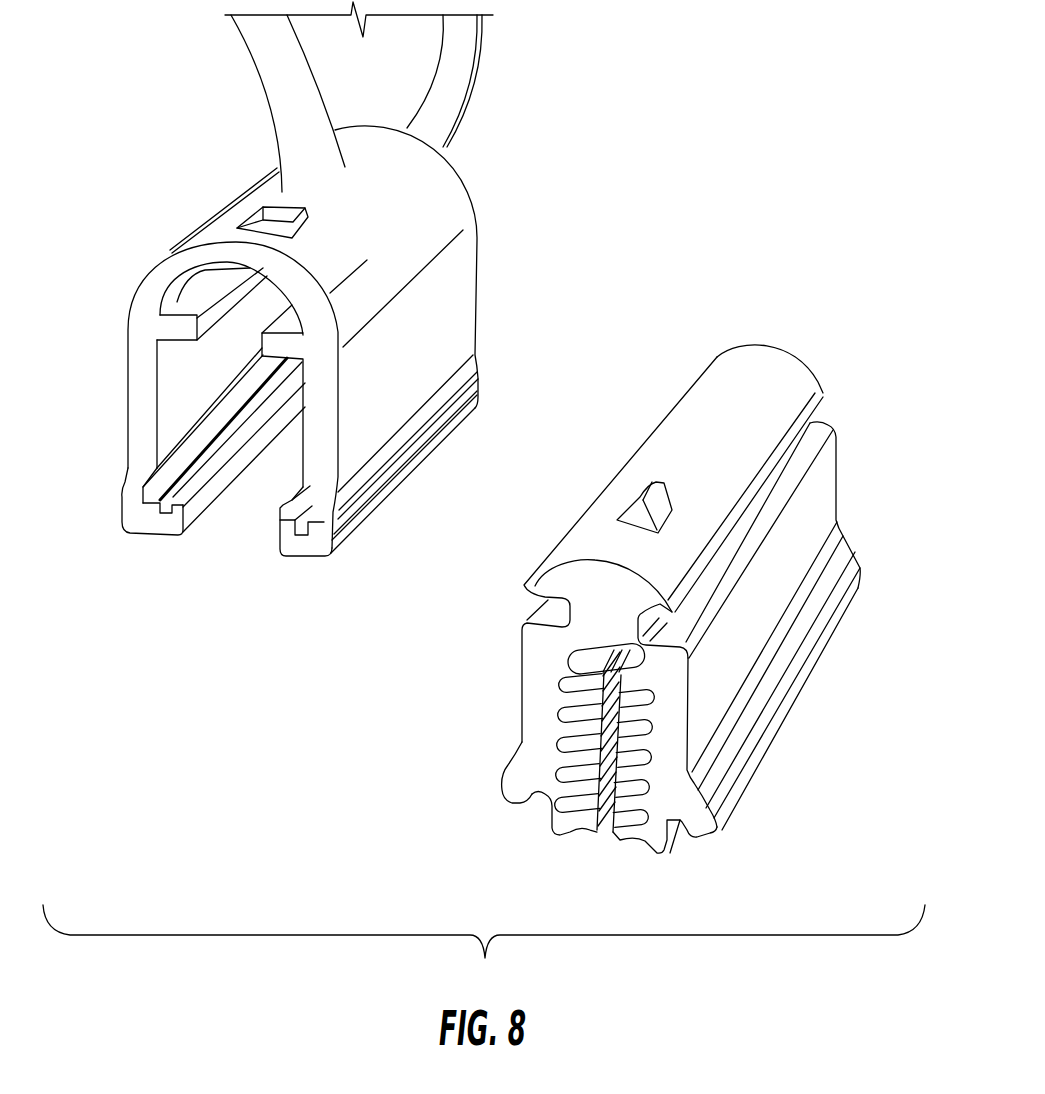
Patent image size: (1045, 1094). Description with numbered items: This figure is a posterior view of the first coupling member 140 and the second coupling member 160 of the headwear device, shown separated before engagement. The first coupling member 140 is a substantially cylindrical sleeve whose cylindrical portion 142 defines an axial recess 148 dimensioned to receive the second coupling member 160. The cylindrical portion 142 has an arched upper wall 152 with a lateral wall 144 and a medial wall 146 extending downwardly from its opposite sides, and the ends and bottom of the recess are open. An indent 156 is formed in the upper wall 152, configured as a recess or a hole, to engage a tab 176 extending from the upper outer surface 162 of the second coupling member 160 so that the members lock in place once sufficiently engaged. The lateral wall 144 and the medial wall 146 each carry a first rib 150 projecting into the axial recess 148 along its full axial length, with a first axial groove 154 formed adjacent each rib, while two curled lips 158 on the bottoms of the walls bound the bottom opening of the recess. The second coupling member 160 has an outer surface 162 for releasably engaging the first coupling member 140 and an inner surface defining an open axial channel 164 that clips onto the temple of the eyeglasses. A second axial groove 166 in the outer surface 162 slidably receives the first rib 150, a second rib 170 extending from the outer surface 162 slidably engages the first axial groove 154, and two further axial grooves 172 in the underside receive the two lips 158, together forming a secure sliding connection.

The first coupling member 140 is at (508, 190).
The cylindrical portion 142 is at (448, 287).
The lateral wall 144 is at (450, 350).
The medial wall 146 is at (126, 413).
The axial recess 148 is at (240, 537).
The first rib 150 is at (163, 325).
The upper wall 152 is at (298, 195).
The first axial groove 154 is at (140, 510).
The indent 156 is at (253, 225).
The lips 158 is at (153, 527).
The second coupling member 160 is at (870, 431).
The outer surface 162 is at (833, 533).
The axial channel 164 is at (608, 832).
The second axial groove 166 is at (532, 592).
The second rib 170 is at (512, 790).
The further axial grooves 172 is at (540, 797).
The tab 176 is at (640, 510).